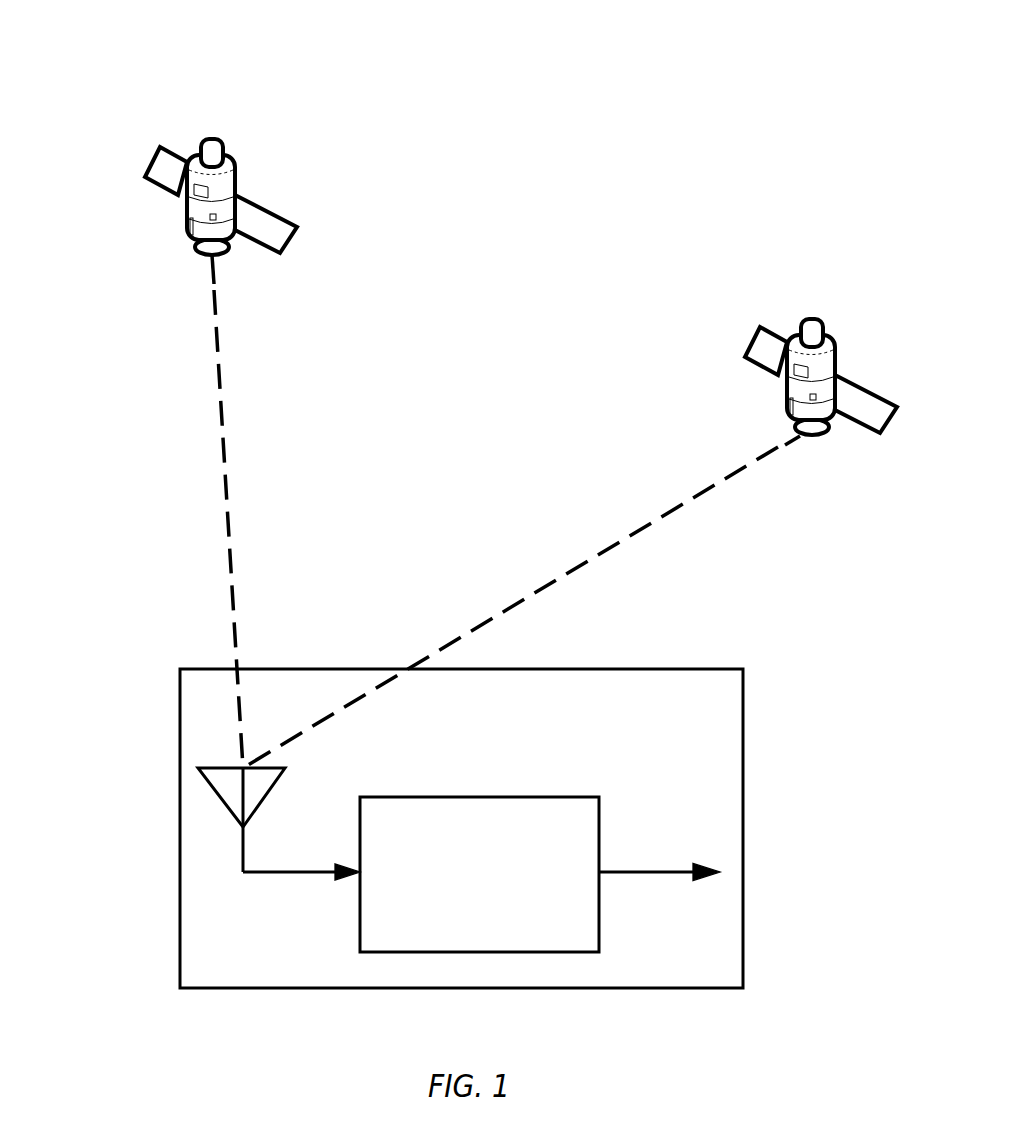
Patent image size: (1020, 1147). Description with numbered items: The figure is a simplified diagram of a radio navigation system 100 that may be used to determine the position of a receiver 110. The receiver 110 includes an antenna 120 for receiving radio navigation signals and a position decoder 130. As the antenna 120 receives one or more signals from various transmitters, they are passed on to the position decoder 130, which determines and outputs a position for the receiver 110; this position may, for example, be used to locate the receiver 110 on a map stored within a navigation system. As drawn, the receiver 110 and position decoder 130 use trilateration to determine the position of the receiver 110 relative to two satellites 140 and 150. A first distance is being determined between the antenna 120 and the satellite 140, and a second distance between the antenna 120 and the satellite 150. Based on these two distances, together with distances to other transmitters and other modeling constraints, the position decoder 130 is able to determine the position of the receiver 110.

The radio navigation system 100 is at (309, 56).
The receiver 110 is at (461, 828).
The antenna 120 is at (276, 790).
The position decoder 130 is at (479, 874).
The satellite 140 is at (160, 147).
The satellite 150 is at (760, 327).